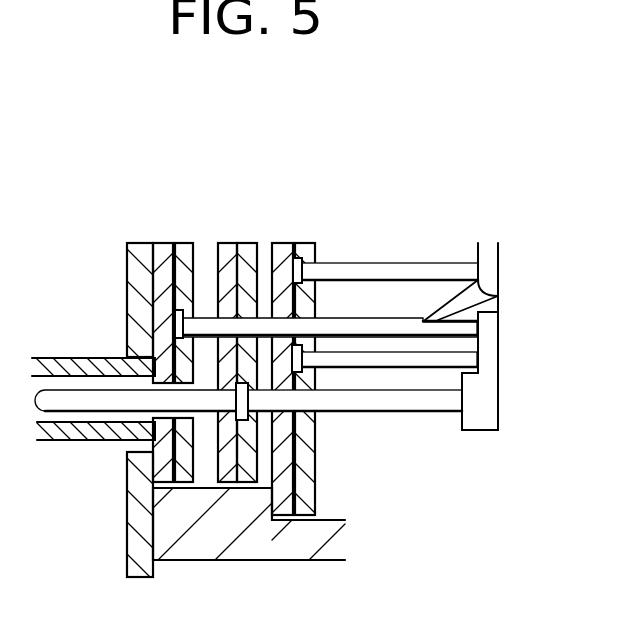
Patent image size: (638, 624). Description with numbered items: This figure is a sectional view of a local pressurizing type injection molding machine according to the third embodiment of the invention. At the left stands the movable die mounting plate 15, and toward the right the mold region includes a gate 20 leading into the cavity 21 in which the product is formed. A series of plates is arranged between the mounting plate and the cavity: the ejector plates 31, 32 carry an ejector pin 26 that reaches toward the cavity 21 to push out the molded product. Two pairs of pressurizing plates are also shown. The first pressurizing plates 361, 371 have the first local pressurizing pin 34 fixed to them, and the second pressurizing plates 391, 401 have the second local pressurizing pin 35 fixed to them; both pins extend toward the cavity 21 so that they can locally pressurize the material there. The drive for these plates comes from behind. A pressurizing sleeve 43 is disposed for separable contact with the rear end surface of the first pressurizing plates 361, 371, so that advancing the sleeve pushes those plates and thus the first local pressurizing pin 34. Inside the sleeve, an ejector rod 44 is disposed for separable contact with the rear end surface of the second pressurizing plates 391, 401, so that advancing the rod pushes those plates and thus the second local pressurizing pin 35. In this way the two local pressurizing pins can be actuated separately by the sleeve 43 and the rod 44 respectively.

The movable die mounting plate 15 is at (135, 252).
The first pressurizing plate 371 is at (162, 248).
The first pressurizing plate 361 is at (182, 243).
The second pressurizing plate 401 is at (232, 257).
The second pressurizing plate 391 is at (247, 253).
The ejector plate 32 is at (280, 253).
The ejector plate 31 is at (310, 247).
The ejector pin 26 is at (390, 273).
The gate 20 is at (473, 295).
The cavity 21 is at (482, 402).
The first local pressurizing pin 34 is at (393, 328).
The second local pressurizing pin 35 is at (363, 405).
The pressurizing sleeve 43 is at (82, 365).
The ejector rod 44 is at (95, 405).